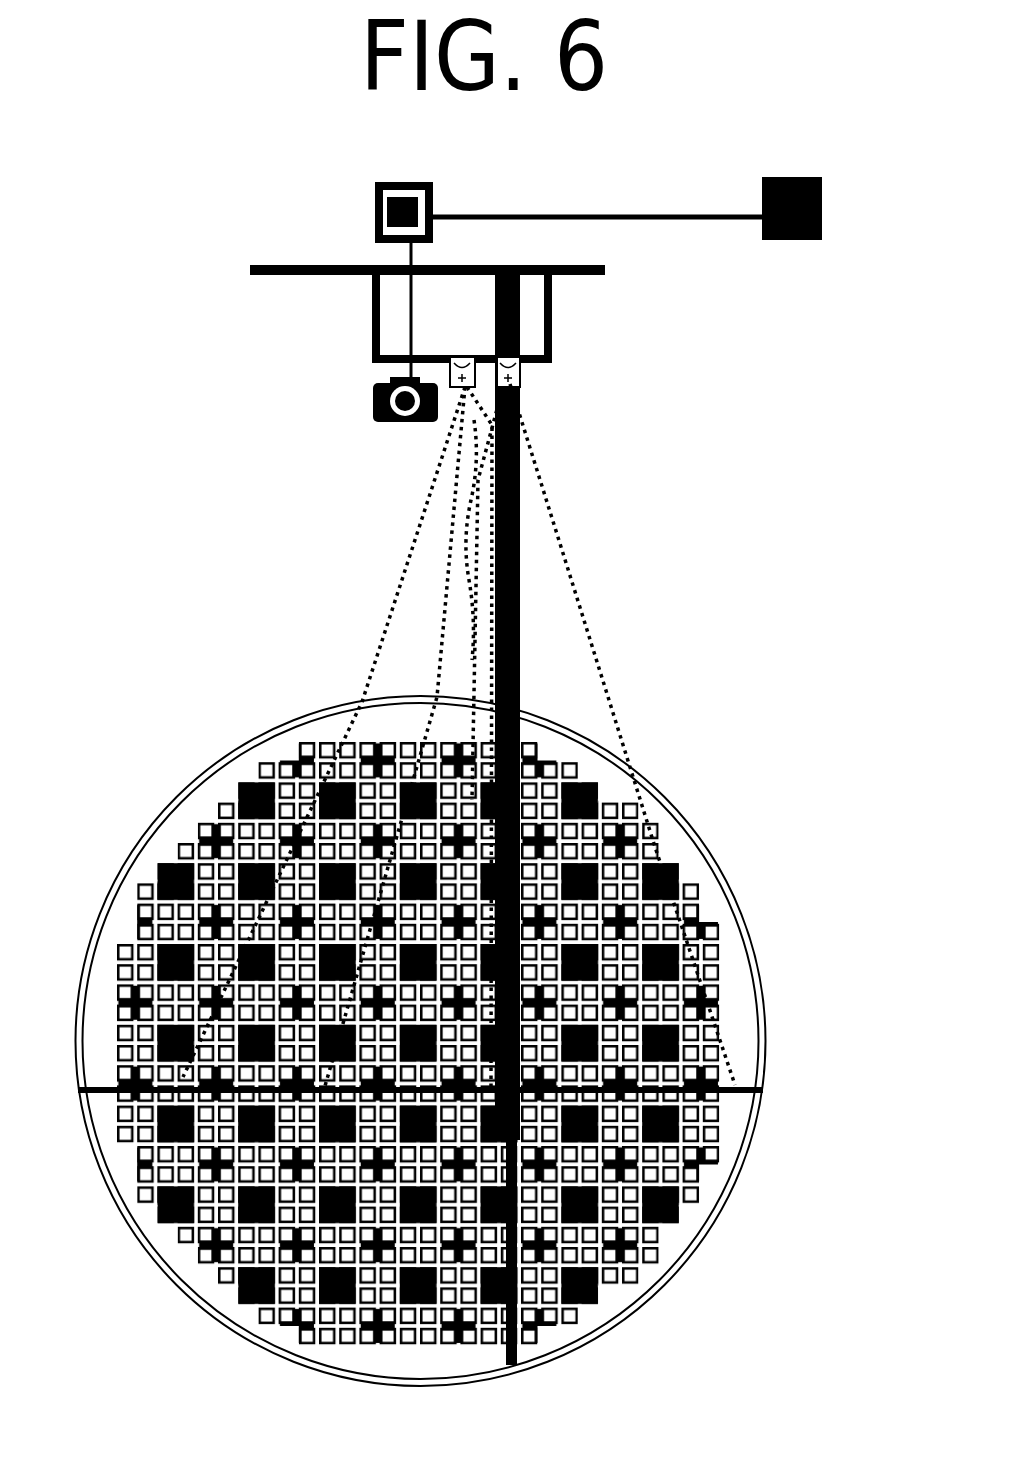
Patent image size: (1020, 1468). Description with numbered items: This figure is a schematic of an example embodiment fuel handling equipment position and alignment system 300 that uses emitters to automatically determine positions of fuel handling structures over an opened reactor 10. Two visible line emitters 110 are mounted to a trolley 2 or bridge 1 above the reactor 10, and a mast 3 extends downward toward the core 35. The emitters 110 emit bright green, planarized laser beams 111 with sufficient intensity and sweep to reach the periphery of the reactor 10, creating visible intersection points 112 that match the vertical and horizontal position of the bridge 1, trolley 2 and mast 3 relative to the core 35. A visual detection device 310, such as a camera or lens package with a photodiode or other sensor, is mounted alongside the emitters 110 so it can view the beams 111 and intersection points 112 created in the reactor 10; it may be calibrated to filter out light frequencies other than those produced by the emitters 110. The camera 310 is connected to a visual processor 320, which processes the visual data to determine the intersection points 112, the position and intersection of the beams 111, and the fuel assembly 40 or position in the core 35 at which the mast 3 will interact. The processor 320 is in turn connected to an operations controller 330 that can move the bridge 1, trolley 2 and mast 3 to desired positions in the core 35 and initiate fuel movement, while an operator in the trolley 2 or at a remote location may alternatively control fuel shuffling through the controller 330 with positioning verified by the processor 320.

The fuel handling equipment position and alignment system 300 is at (115, 477).
The visual processor 320 is at (375, 210).
The operations controller 330 is at (803, 240).
The visual detection device 310 is at (373, 405).
The bridge 1 is at (457, 314).
The trolley 2 is at (552, 331).
The mast 3 is at (520, 672).
The visible line emitters 110 is at (520, 380).
The planarized laser beams 111 is at (362, 702).
The visible intersection points 112 is at (80, 1100).
The reactor 10 is at (152, 830).
The core 35 is at (697, 867).
The fuel assembly 40 is at (697, 1190).